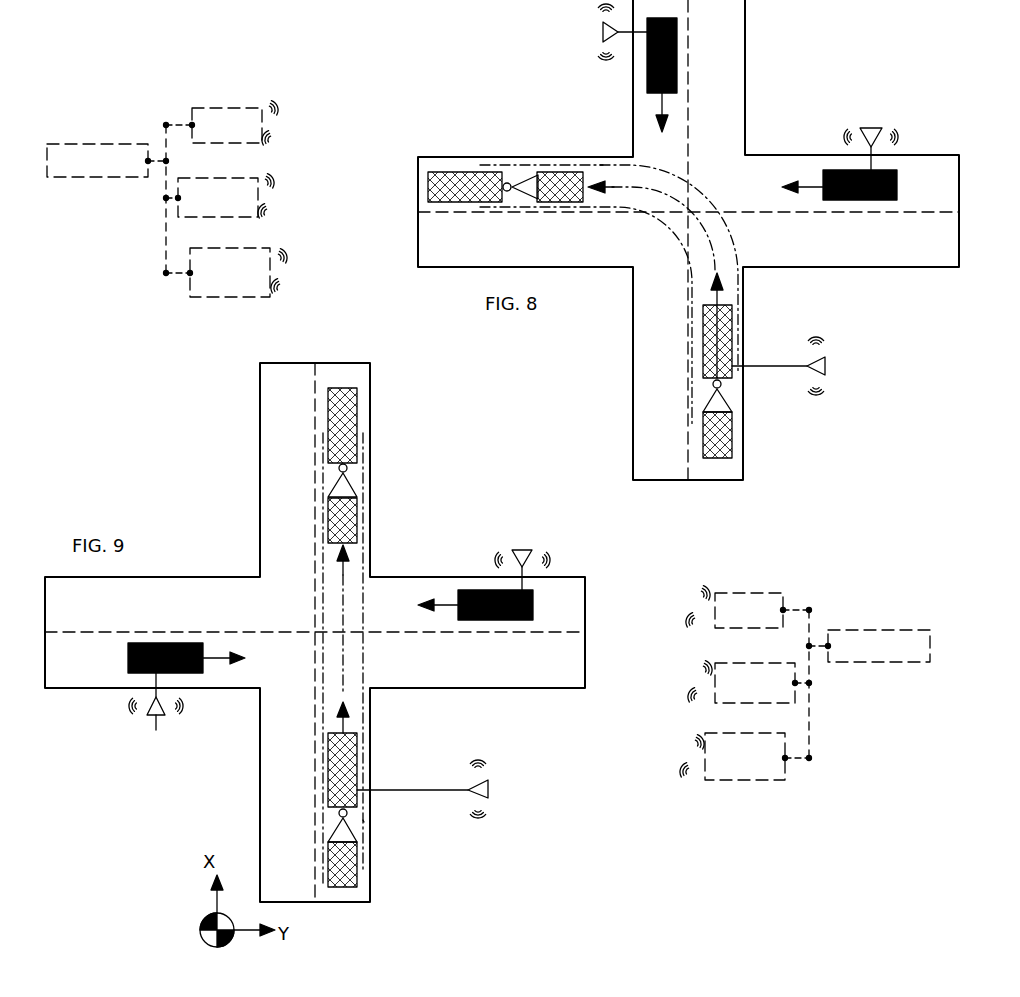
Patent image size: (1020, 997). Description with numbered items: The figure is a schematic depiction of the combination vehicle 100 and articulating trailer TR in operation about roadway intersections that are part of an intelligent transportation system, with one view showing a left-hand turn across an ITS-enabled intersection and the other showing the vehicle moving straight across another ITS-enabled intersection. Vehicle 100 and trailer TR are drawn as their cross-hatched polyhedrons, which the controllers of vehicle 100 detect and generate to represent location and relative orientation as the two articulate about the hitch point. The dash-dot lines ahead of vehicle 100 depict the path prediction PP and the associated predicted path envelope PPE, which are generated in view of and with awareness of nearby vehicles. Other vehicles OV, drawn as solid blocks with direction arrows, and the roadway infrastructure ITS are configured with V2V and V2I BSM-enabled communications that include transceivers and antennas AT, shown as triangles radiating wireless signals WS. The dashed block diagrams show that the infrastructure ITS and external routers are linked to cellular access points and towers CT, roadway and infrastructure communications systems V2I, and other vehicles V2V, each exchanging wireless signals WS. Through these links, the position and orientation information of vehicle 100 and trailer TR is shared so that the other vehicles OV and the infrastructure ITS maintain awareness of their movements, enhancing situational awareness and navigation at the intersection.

In FIG. 8, the vehicle 100 is at (732, 318).
In FIG. 9, the vehicle 100 is at (357, 758).
In FIG. 8, the trailer TR is at (732, 445).
In FIG. 9, the trailer TR is at (357, 870).
In FIG. 8, the path prediction PP is at (712, 245).
In FIG. 9, the path prediction PP is at (345, 662).
In FIG. 8, the predicted path envelope PPE is at (615, 168).
In FIG. 9, the predicted path envelope PPE is at (365, 825).
In FIG. 8, the other vehicle OV is at (677, 47).
In FIG. 9, the other vehicle OV is at (475, 590).
In FIG. 8, the antenna AT is at (825, 366).
In FIG. 9, the antenna AT is at (488, 790).
In FIG. 8, the wireless signals WS is at (820, 390).
In FIG. 9, the wireless signals WS is at (490, 810).
In FIG. 8, the roadway infrastructure ITS is at (108, 199).
In FIG. 9, the roadway infrastructure ITS is at (869, 684).
In FIG. 8, the cellular access points and towers CT is at (311, 120).
In FIG. 9, the cellular access points and towers CT is at (666, 604).
In FIG. 8, the roadway and infrastructure communications systems V2I is at (305, 199).
In FIG. 9, the roadway and infrastructure communications systems V2I is at (673, 679).
In FIG. 8, the vehicle-to-vehicle communications V2V is at (313, 277).
In FIG. 9, the vehicle-to-vehicle communications V2V is at (666, 760).